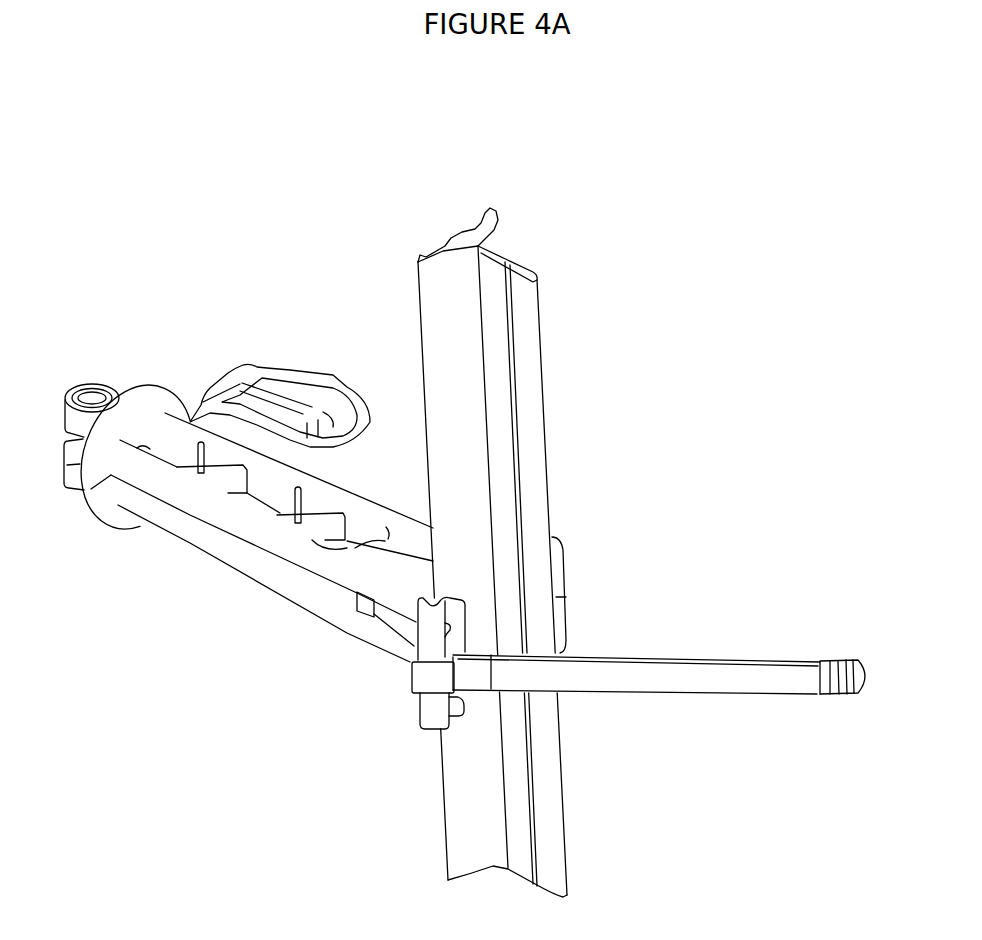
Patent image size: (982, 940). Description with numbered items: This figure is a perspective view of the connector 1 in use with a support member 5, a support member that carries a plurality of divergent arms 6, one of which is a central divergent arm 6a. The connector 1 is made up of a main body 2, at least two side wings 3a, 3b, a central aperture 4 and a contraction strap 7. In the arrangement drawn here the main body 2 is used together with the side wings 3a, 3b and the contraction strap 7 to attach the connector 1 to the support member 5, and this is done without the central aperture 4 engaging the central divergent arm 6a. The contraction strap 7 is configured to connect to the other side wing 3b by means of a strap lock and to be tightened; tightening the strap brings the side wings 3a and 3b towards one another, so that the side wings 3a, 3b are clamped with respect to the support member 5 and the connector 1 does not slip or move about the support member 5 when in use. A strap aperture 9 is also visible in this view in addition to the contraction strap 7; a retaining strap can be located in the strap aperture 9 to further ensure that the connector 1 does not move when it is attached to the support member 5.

The connector 1 is at (161, 372).
The main body 2 is at (230, 555).
The side wing 3a is at (425, 647).
The side wing 3b is at (567, 597).
The central aperture 4 is at (417, 553).
The support member 5 is at (497, 415).
The divergent arms 6 is at (419, 256).
The central divergent arm 6a is at (536, 272).
The contraction strap 7 is at (713, 682).
The strap aperture 9 is at (385, 613).